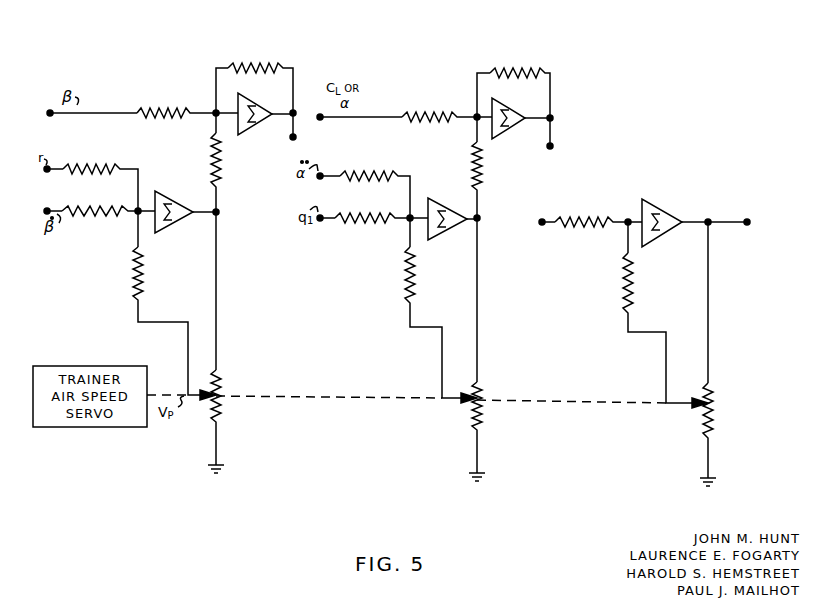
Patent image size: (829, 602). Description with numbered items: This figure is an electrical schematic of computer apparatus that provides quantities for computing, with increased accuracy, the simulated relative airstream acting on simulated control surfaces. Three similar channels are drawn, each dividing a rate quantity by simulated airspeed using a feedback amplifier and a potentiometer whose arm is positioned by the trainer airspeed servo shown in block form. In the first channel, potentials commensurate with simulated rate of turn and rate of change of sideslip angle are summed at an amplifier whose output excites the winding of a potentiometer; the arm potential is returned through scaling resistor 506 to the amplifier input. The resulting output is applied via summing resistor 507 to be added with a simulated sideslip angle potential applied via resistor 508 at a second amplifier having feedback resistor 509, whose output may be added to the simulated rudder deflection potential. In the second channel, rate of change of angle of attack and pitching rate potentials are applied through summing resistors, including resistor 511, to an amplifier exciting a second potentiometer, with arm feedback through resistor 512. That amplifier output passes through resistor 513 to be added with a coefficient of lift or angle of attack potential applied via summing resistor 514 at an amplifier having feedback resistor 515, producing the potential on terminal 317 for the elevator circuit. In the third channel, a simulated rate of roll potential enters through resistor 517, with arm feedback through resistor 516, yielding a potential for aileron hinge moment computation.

The scaling resistor 506 is at (135, 282).
The summing resistor 507 is at (211, 153).
The resistor 508 is at (139, 114).
The feedback resistor 509 is at (235, 67).
The summing resistor 511 is at (394, 212).
The resistor 512 is at (408, 286).
The resistor 513 is at (477, 156).
The summing resistor 514 is at (412, 116).
The feedback resistor 515 is at (497, 72).
The resistor 516 is at (619, 295).
The resistor 517 is at (567, 219).
The terminal 317 is at (553, 147).